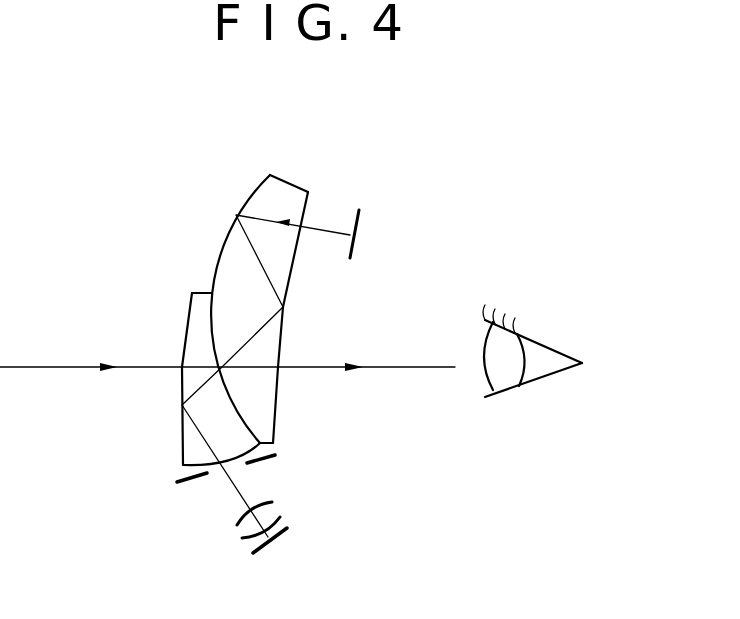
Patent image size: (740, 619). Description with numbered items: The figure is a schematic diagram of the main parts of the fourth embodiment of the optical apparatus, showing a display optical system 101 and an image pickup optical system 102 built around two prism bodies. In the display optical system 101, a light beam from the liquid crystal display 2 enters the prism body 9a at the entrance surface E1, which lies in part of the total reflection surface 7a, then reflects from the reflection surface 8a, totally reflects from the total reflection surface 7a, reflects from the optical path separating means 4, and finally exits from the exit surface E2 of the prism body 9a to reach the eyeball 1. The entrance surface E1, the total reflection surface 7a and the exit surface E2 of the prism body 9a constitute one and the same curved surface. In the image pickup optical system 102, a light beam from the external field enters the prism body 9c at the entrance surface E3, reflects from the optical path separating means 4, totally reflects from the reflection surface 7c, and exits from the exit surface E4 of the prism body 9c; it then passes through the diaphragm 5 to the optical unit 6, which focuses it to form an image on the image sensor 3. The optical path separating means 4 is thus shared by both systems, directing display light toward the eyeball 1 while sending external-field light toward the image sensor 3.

The display optical system 101 is at (240, 185).
The image pickup optical system 102 is at (163, 387).
The eyeball 1 is at (532, 385).
The liquid crystal display (LCD) 2 is at (359, 225).
The image sensor (CCD) 3 is at (287, 533).
The optical path separating means 4 is at (187, 308).
The diaphragm 5 is at (183, 483).
The optical unit 6 is at (275, 510).
The total reflection surface 7a is at (283, 330).
The reflection surface 7c is at (182, 425).
The reflection surface 8a is at (224, 240).
The prism body 9a is at (284, 181).
The prism body 9c is at (190, 457).
The entrance surface E1 is at (310, 200).
The exit surface E2 is at (277, 387).
The entrance surface E3 is at (182, 340).
The exit surface E4 is at (240, 468).